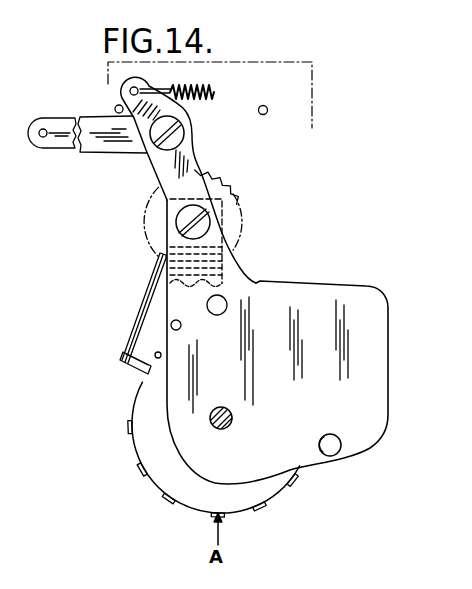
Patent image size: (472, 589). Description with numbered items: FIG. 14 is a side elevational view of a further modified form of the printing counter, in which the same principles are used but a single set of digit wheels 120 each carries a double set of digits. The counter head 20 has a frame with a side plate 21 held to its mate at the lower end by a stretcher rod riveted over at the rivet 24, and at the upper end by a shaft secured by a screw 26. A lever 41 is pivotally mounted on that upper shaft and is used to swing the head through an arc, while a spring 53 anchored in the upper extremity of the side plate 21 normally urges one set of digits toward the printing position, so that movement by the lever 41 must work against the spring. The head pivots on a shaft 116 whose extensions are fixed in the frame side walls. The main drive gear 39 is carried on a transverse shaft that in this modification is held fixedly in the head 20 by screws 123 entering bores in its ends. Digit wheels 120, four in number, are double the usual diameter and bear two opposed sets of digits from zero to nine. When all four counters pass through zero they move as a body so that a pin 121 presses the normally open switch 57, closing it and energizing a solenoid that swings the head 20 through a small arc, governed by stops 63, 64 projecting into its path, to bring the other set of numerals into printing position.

The counter head 20 is at (322, 252).
The side plate 21 is at (376, 380).
The rivet 24 is at (332, 457).
The screw 26 is at (181, 135).
The drive gear 39 is at (234, 198).
The lever 41 is at (101, 157).
The spring 53 is at (207, 80).
The switch 57 is at (133, 327).
The stop 63 is at (115, 105).
The stop 64 is at (288, 97).
The shaft 116 is at (237, 397).
The digit wheels 120 is at (162, 486).
The pin 121 is at (138, 377).
The screw 123 is at (203, 226).